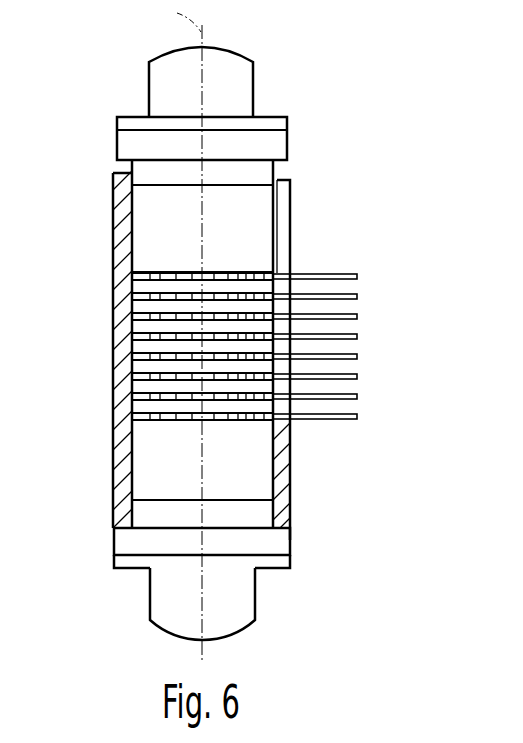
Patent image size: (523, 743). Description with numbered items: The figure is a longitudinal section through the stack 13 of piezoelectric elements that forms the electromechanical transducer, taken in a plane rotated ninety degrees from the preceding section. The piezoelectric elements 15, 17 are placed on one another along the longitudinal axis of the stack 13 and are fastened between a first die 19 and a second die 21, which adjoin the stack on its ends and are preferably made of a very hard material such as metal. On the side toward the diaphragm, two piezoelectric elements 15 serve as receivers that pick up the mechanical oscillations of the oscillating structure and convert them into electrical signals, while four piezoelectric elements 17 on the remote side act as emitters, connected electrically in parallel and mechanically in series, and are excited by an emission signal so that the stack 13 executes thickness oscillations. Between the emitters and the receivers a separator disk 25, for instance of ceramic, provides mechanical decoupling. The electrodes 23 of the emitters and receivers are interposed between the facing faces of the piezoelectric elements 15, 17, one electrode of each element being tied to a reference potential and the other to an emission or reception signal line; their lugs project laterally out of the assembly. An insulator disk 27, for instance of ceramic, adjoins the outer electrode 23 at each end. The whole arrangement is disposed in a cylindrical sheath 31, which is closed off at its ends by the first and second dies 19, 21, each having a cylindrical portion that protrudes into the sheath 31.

The stack 13 is at (92, 64).
The piezoelectric element 15 is at (161, 346).
The piezoelectric element 17 is at (133, 342).
The first die 19 is at (243, 600).
The second die 21 is at (243, 78).
The electrode 23 is at (357, 277).
The separator disk 25 is at (237, 346).
The insulator disk 27 is at (262, 213).
The sheath 31 is at (122, 476).